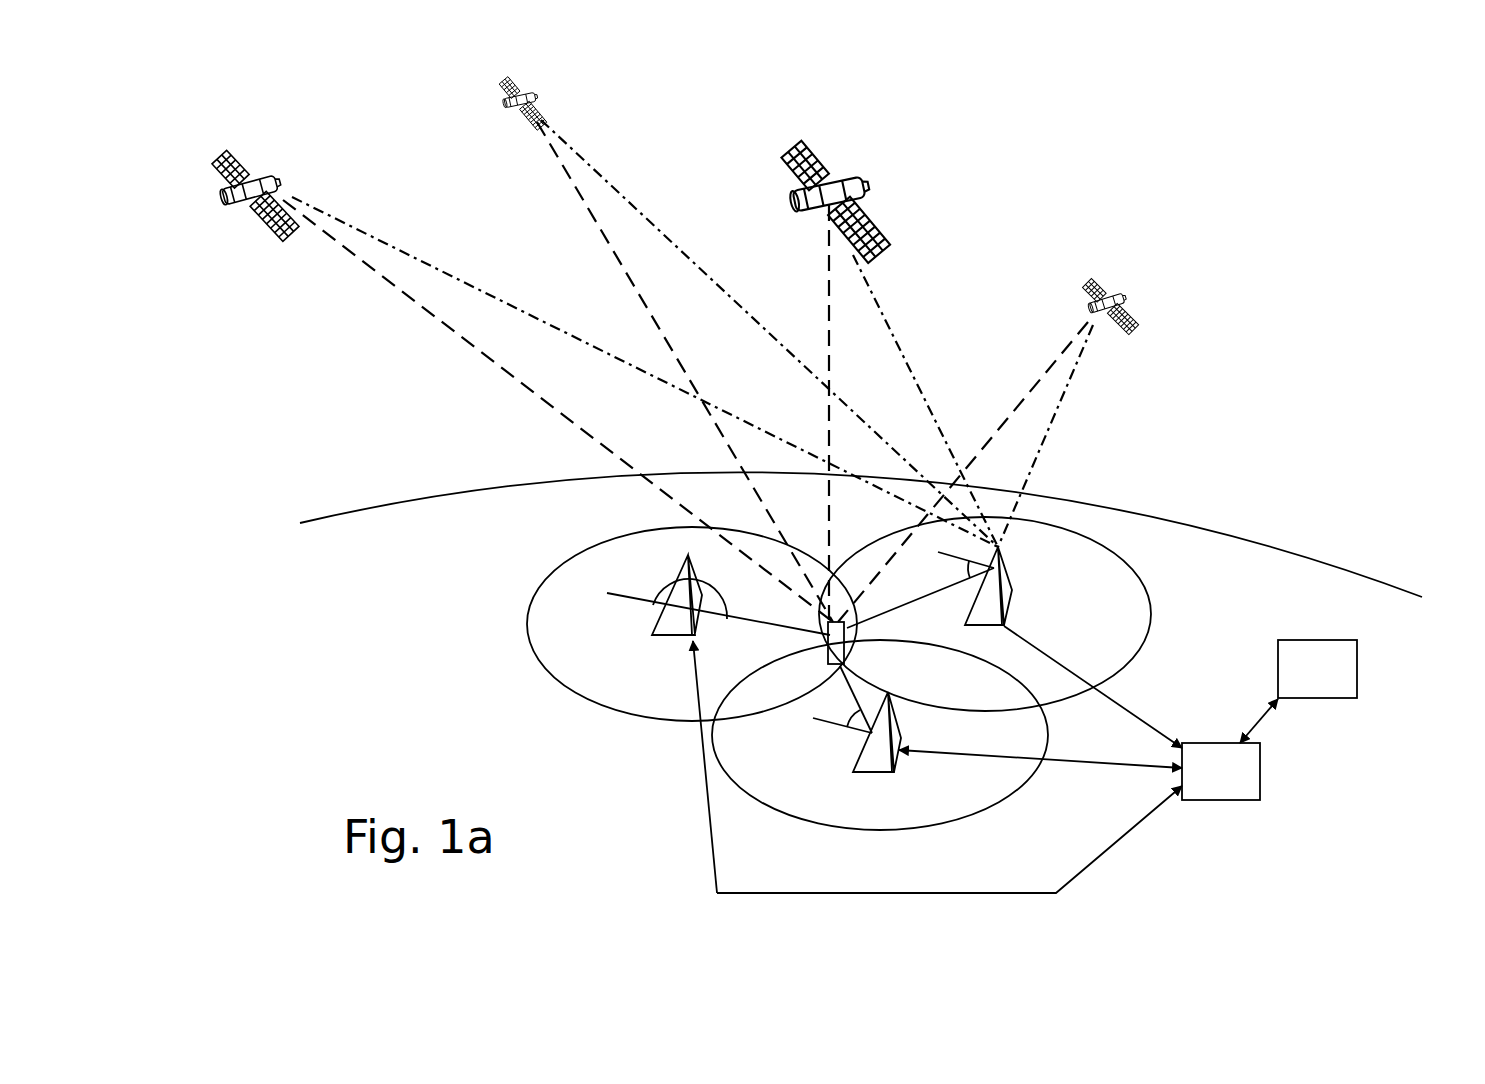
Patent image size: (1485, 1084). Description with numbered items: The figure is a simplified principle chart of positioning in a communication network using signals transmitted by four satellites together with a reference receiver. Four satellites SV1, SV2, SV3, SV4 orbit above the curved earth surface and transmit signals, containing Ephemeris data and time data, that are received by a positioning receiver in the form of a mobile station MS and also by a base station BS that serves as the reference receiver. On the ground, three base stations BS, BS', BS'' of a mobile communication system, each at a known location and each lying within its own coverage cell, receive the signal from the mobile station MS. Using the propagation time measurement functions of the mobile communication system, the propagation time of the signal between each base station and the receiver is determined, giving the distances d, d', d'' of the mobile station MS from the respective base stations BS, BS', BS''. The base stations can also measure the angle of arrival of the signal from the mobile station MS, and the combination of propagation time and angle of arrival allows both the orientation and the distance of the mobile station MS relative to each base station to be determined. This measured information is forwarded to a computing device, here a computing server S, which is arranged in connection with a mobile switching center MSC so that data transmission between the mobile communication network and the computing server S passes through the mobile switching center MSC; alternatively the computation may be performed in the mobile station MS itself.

The satellite SV1 is at (244, 185).
The satellite SV2 is at (519, 87).
The satellite SV3 is at (835, 191).
The satellite SV4 is at (1111, 287).
The base station BS is at (1034, 605).
The base station BS' is at (669, 724).
The base station BS'' is at (883, 783).
The mobile station MS is at (846, 643).
The mobile switching center MSC is at (1262, 746).
The computing server S is at (1357, 644).
The distance d is at (920, 593).
The distance d' is at (718, 630).
The distance d'' is at (824, 722).